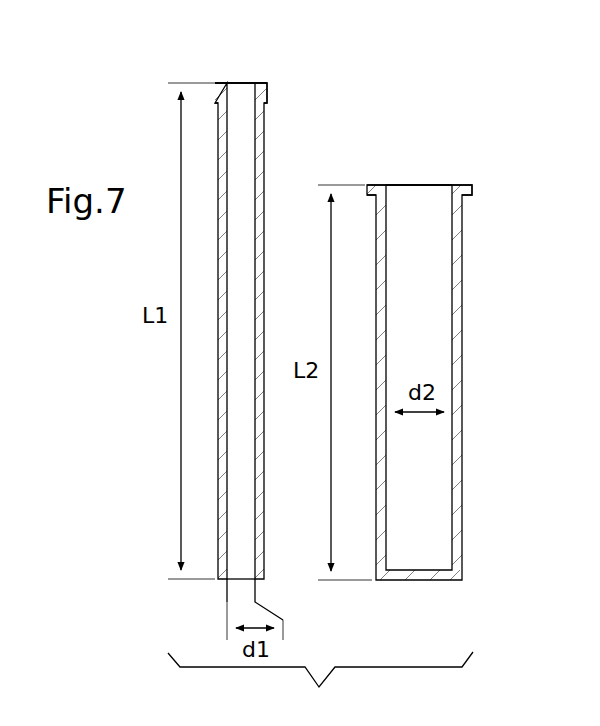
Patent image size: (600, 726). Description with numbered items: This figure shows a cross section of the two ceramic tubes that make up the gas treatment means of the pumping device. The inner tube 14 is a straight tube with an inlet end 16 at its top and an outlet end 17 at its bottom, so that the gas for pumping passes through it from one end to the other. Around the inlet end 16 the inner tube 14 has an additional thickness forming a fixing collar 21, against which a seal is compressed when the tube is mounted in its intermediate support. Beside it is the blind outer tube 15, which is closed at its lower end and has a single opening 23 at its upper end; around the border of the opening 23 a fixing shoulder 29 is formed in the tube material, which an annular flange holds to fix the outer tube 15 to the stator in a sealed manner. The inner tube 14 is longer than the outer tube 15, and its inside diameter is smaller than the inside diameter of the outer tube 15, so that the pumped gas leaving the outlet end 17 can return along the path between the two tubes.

The inner tube 14 is at (268, 58).
The outer tube 15 is at (473, 156).
The inlet end 16 is at (237, 83).
The outlet end 17 is at (237, 581).
The fixing collar 21 is at (268, 88).
The opening 23 is at (432, 184).
The fixing shoulder 29 is at (378, 184).